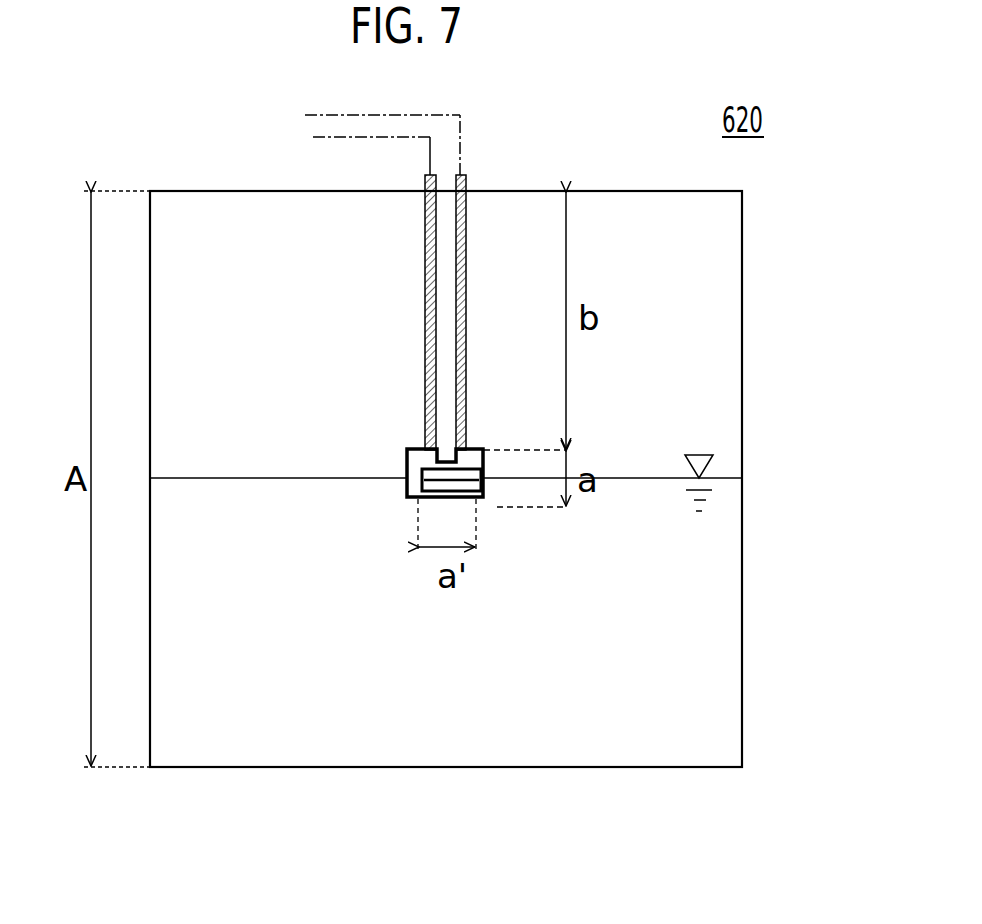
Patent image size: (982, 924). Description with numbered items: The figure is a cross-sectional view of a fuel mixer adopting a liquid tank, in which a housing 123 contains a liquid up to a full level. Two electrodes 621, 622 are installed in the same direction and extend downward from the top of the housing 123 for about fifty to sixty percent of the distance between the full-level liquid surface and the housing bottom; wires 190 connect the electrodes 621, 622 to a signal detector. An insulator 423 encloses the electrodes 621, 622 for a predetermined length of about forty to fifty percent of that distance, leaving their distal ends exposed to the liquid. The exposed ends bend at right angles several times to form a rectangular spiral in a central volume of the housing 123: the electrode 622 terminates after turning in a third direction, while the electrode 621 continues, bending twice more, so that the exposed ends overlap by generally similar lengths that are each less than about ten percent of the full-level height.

The housing 123 is at (742, 278).
The wire 190 is at (431, 150).
The insulator 423 is at (425, 292).
The electrode 621 is at (408, 488).
The electrode 622 is at (410, 460).